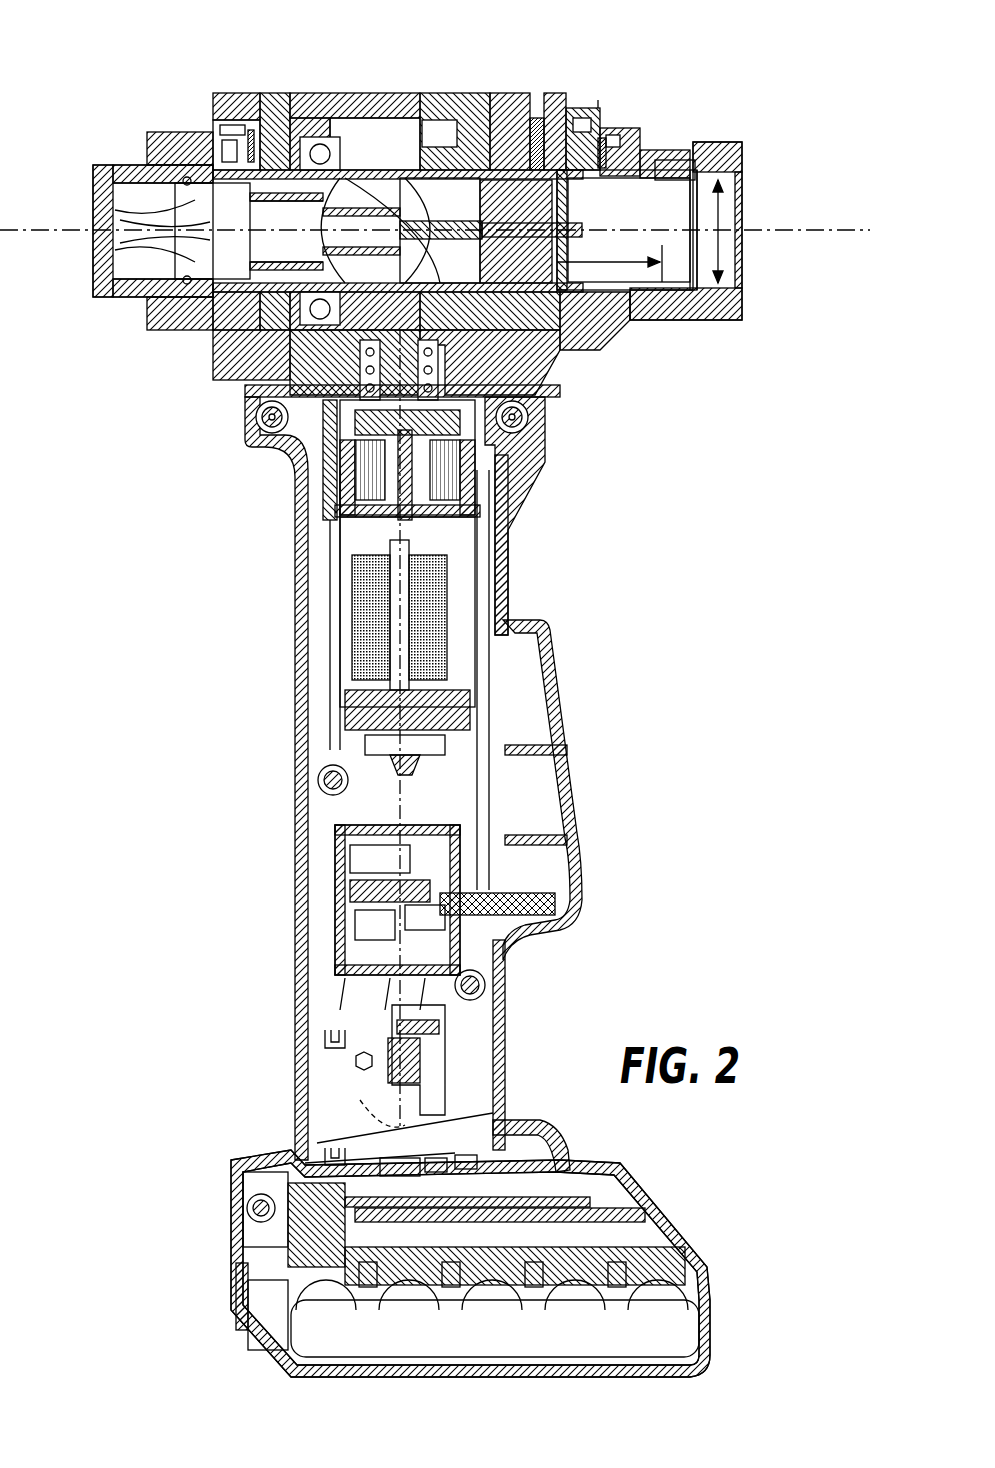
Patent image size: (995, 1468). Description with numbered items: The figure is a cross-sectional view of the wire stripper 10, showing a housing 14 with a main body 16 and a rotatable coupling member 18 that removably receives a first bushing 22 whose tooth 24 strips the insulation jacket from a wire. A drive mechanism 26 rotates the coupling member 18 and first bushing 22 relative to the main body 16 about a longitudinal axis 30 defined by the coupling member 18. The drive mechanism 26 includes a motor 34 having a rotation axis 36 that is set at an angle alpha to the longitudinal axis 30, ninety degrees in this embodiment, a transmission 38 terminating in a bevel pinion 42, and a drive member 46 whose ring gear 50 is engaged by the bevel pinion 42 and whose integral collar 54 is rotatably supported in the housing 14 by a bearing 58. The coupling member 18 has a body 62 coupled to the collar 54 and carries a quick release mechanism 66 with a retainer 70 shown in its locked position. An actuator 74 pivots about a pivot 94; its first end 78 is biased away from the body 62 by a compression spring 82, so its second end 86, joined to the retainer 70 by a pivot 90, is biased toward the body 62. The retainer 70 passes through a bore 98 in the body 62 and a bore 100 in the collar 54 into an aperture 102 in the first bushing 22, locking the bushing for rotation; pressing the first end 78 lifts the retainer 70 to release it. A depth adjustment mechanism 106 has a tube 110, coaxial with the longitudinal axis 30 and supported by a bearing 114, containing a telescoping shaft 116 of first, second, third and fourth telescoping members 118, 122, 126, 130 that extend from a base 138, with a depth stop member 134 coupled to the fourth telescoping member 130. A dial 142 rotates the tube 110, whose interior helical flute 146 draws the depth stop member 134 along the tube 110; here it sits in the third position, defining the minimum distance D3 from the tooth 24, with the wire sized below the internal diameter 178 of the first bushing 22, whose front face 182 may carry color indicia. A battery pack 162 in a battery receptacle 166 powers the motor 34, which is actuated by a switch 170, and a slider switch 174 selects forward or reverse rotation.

The wire stripper 10 is at (829, 84).
The housing 14 is at (298, 703).
The main body 16 is at (290, 95).
The rotatable coupling member 18 is at (592, 342).
The first bushing 22 is at (650, 300).
The tooth 24 is at (702, 322).
The drive mechanism 26 is at (360, 545).
The longitudinal axis 30 is at (808, 232).
The motor 34 is at (362, 608).
The rotation axis 36 is at (370, 1102).
The transmission 38 is at (357, 475).
The bevel pinion 42 is at (352, 330).
The drive member 46 is at (432, 200).
The ring gear 50 is at (517, 470).
The collar 54 is at (530, 362).
The bearing 58 is at (522, 422).
The body 62 is at (578, 122).
The quick release mechanism 66 is at (598, 92).
The retainer 70 is at (645, 150).
The actuator 74 is at (565, 110).
The first end 78 is at (540, 120).
The compression spring 82 is at (470, 165).
The second end 86 is at (610, 122).
The pivot 90 is at (623, 130).
The pivot 94 is at (520, 150).
The bore 98 is at (668, 160).
The bore 100 is at (437, 221).
The aperture 102 is at (698, 158).
The depth adjustment mechanism 106 is at (228, 128).
The tube 110 is at (268, 205).
The bearing 114 is at (296, 284).
The telescoping shaft 116 is at (183, 284).
The first telescoping member 118 is at (192, 215).
The second telescoping member 122 is at (150, 142).
The third telescoping member 126 is at (240, 96).
The fourth telescoping member 130 is at (322, 140).
The depth stop member 134 is at (580, 356).
The base 138 is at (148, 162).
The dial 142 is at (205, 312).
The helical flute 146 is at (200, 262).
The battery pack 162 is at (712, 1318).
The battery receptacle 166 is at (572, 1163).
The switch 170 is at (575, 808).
The slider switch 174 is at (440, 897).
The internal diameter 178 is at (737, 258).
The front face 182 is at (746, 312).
The third distance D3 is at (628, 337).
The angle α alpha is at (365, 265).